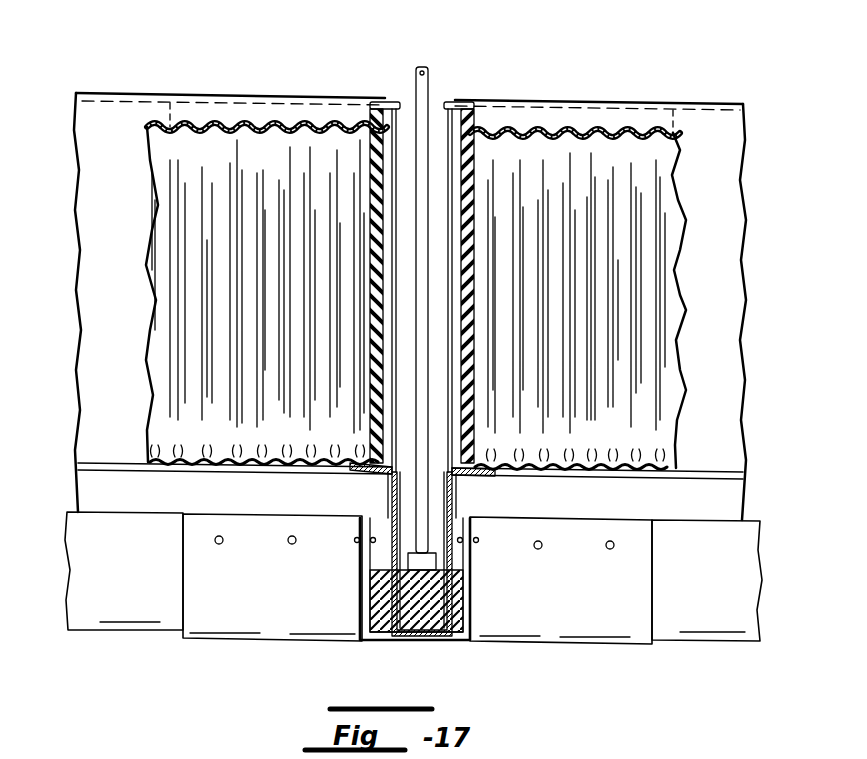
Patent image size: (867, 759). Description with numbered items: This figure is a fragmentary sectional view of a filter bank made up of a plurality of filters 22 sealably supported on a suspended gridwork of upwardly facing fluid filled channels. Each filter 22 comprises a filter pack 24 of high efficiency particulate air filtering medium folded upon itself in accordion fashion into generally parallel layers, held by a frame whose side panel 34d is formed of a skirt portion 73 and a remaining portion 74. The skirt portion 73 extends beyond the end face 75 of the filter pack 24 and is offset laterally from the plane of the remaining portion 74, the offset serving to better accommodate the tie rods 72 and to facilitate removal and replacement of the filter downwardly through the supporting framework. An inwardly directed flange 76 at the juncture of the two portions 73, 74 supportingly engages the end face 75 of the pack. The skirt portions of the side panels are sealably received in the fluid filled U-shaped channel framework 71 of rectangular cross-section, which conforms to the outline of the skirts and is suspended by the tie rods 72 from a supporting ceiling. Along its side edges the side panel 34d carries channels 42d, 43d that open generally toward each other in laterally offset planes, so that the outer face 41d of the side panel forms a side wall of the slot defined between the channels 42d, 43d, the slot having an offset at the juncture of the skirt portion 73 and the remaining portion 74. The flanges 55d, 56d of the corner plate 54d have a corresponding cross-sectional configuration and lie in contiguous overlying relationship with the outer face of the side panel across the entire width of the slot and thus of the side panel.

The filter 22 is at (128, 82).
The filter pack 24 is at (136, 285).
The side panel 34d is at (374, 124).
The outer face of the side panel 41d is at (393, 313).
The channel 42d is at (388, 100).
The channel 43d is at (400, 634).
The corner plate 54d is at (444, 127).
The flange of the corner plate 55d is at (391, 493).
The flange of the corner plate 56d is at (210, 112).
The U-shaped channel framework 71 is at (258, 648).
The tie rod 72 is at (420, 395).
The skirt portion 73 is at (370, 518).
The remaining portion 74 is at (370, 117).
The end face of the filter pack 75 is at (208, 467).
The inwardly directed flange 76 is at (330, 470).